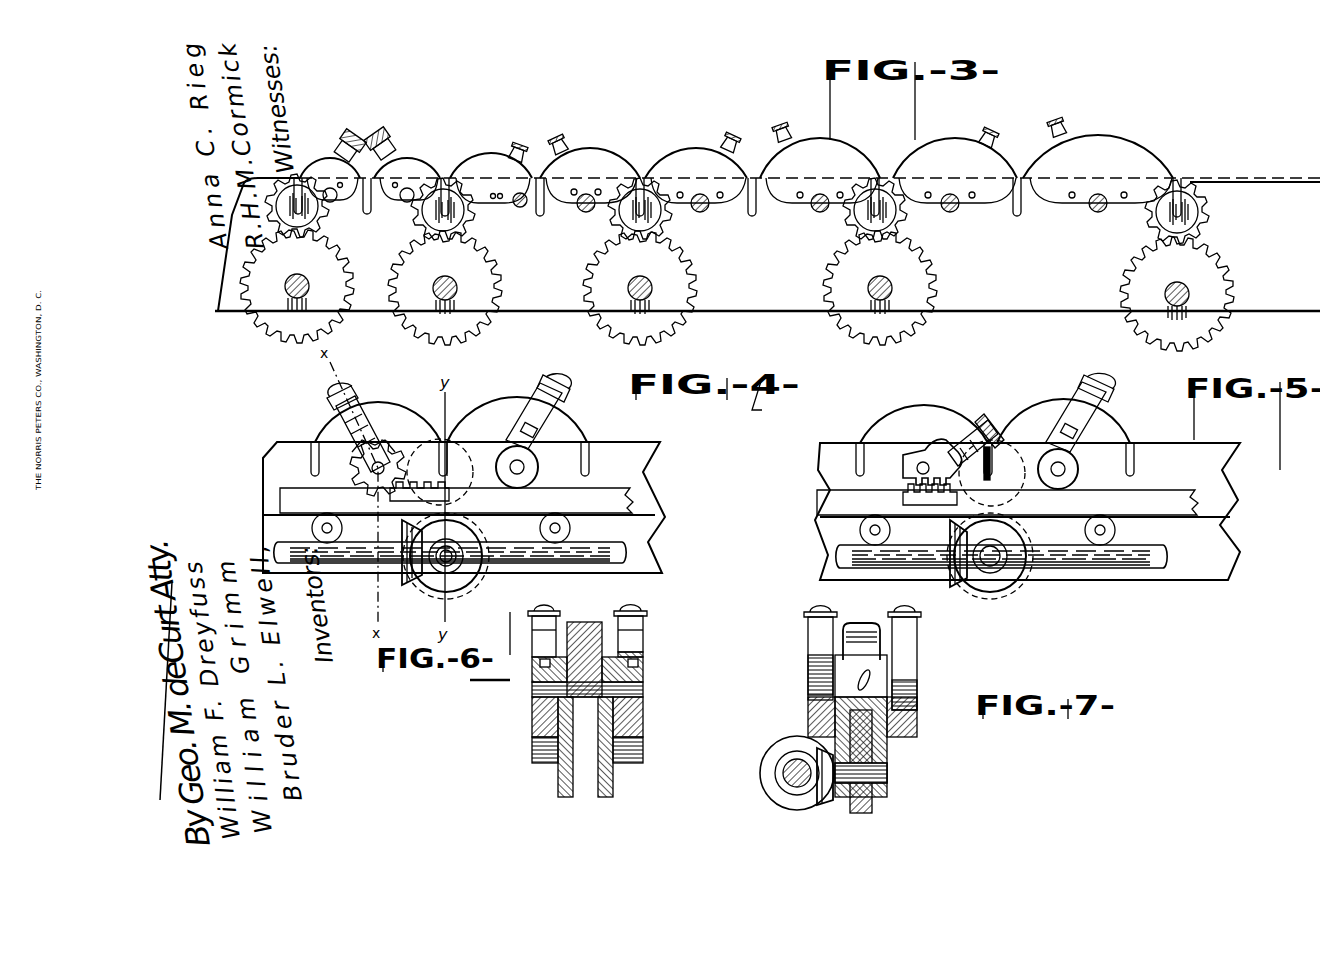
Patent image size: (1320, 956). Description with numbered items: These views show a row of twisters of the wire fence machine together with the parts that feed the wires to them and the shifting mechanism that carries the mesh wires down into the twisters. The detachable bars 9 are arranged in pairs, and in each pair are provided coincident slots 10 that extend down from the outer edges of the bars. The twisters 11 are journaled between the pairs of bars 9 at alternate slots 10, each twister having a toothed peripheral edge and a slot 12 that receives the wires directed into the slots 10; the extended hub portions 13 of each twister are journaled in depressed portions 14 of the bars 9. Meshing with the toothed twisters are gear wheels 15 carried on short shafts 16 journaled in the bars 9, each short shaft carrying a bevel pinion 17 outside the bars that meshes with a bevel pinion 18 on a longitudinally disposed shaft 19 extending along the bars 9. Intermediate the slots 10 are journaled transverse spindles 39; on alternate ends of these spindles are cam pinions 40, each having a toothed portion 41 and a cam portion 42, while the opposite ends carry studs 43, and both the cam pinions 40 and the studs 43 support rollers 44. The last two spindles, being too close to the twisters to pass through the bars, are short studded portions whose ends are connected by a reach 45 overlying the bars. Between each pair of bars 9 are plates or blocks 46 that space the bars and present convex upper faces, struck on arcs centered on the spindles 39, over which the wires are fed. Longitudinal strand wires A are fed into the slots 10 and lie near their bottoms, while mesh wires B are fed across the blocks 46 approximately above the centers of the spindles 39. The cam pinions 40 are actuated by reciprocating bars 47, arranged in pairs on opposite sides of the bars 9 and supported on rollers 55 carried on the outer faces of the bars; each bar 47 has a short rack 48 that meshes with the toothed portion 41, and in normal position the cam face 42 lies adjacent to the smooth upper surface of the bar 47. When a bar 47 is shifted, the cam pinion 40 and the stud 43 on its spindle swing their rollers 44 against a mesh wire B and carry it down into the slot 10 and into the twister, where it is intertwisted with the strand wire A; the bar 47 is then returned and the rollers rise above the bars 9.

In FIG. 3, the detachable frames or bars 9 is at (1058, 295).
In FIG. 5, the detachable frames or bars 9 is at (1205, 515).
In FIG. 6, the detachable frames or bars 9 is at (605, 797).
In FIG. 7, the detachable frames or bars 9 is at (882, 752).
In FIG. 3, the slots or grooves 10 is at (446, 195).
In FIG. 4, the slots or grooves 10 is at (585, 455).
In FIG. 5, the slots or grooves 10 is at (860, 455).
In FIG. 3, the twisters 11 is at (615, 215).
In FIG. 7, the twisters 11 is at (840, 672).
In FIG. 3, the slot of the twister 12 is at (432, 208).
In FIG. 7, the slot of the twister 12 is at (870, 682).
In FIG. 7, the extended hub portions 13 is at (830, 710).
In FIG. 7, the depressed portions 14 is at (905, 696).
In FIG. 3, the gear wheels 15 is at (320, 278).
In FIG. 7, the gear wheels 15 is at (872, 808).
In FIG. 3, the short shafts 16 is at (652, 289).
In FIG. 4, the short shafts 16 is at (455, 550).
In FIG. 7, the short shafts 16 is at (888, 775).
In FIG. 4, the bevel pinion 17 is at (470, 580).
In FIG. 5, the bevel pinion 17 is at (1002, 580).
In FIG. 7, the bevel pinion 17 is at (824, 800).
In FIG. 4, the bevel pinions 18 is at (410, 568).
In FIG. 5, the bevel pinions 18 is at (960, 578).
In FIG. 7, the bevel pinions 18 is at (775, 793).
In FIG. 4, the longitudinally disposed shafts 19 is at (600, 553).
In FIG. 5, the longitudinally disposed shafts 19 is at (1150, 558).
In FIG. 7, the longitudinally disposed shafts 19 is at (790, 775).
In FIG. 3, the transverse spindles 39 is at (700, 196).
In FIG. 4, the transverse spindles 39 is at (524, 468).
In FIG. 5, the transverse spindles 39 is at (1065, 468).
In FIG. 6, the transverse spindles 39 is at (630, 690).
In FIG. 4, the cam pinion 40 is at (385, 455).
In FIG. 6, the cam pinion 40 is at (535, 678).
In FIG. 4, the toothed portion 41 is at (372, 468).
In FIG. 5, the toothed portion 41 is at (905, 494).
In FIG. 7, the toothed portion 41 is at (830, 690).
In FIG. 4, the cam portion 42 is at (378, 493).
In FIG. 5, the cam portion 42 is at (915, 468).
In FIG. 6, the stud 43 is at (640, 668).
In FIG. 7, the stud 43 is at (902, 712).
In FIG. 4, the roller 44 is at (345, 405).
In FIG. 5, the roller 44 is at (985, 425).
In FIG. 6, the roller 44 is at (545, 625).
In FIG. 7, the roller 44 is at (822, 627).
In FIG. 3, the reach 45 is at (342, 146).
In FIG. 3, the plates or blocks 46 is at (625, 138).
In FIG. 4, the plates or blocks 46 is at (558, 430).
In FIG. 5, the plates or blocks 46 is at (936, 426).
In FIG. 6, the plates or blocks 46 is at (585, 642).
In FIG. 7, the plates or blocks 46 is at (861, 641).
In FIG. 4, the reciprocally carried bars 47 is at (608, 500).
In FIG. 5, the reciprocally carried bars 47 is at (1172, 503).
In FIG. 6, the reciprocally carried bars 47 is at (533, 725).
In FIG. 4, the short rack 48 is at (455, 470).
In FIG. 5, the short rack 48 is at (972, 490).
In FIG. 4, the rollers 55 is at (313, 527).
In FIG. 5, the rollers 55 is at (862, 530).
In FIG. 6, the rollers 55 is at (533, 757).
In FIG. 3, the strand wires A is at (739, 214).
In FIG. 4, the strand wires A is at (431, 462).
In FIG. 5, the strand wires A is at (1022, 465).
In FIG. 3, the mesh wires B is at (485, 152).
In FIG. 4, the mesh wires B is at (380, 400).
In FIG. 5, the mesh wires B is at (1060, 398).